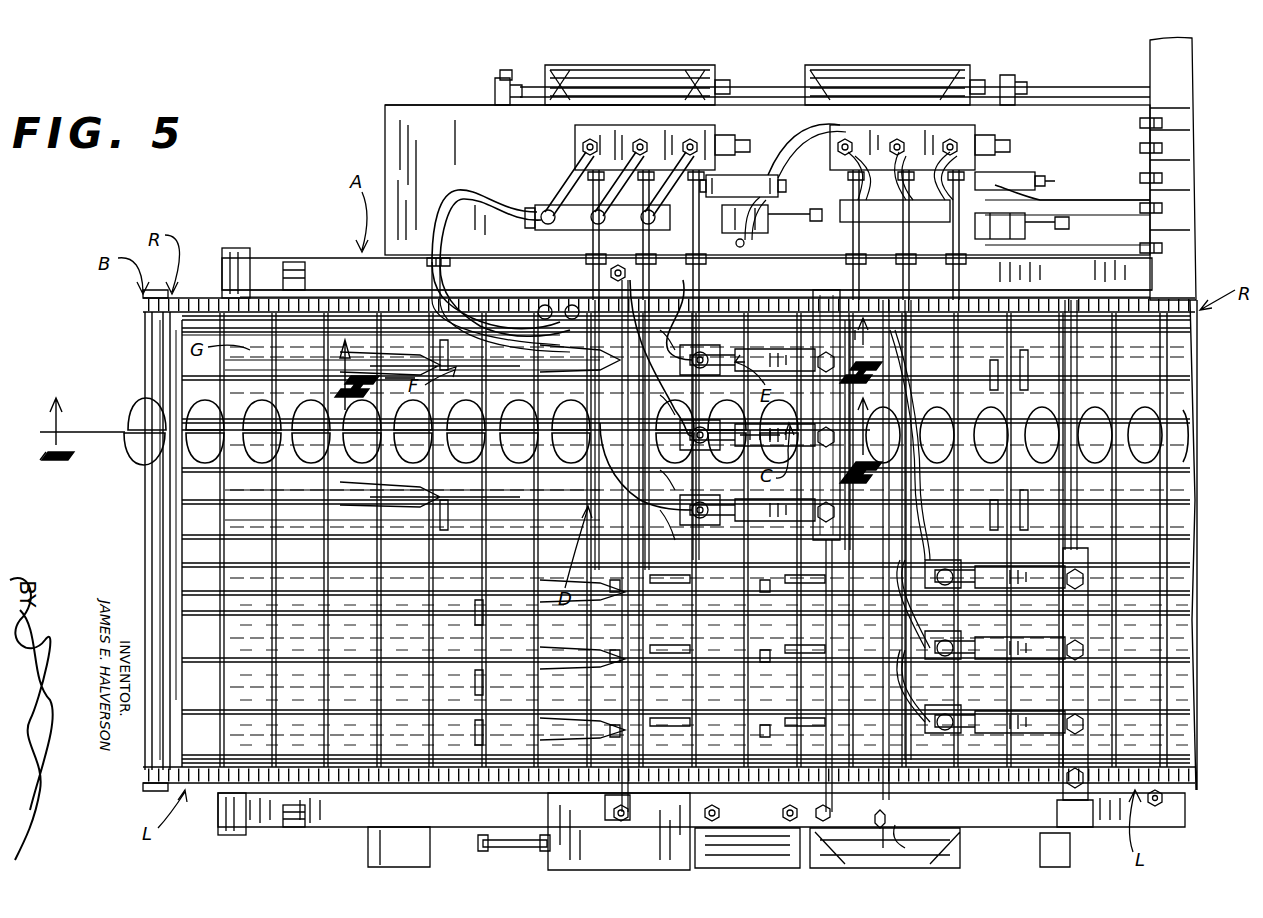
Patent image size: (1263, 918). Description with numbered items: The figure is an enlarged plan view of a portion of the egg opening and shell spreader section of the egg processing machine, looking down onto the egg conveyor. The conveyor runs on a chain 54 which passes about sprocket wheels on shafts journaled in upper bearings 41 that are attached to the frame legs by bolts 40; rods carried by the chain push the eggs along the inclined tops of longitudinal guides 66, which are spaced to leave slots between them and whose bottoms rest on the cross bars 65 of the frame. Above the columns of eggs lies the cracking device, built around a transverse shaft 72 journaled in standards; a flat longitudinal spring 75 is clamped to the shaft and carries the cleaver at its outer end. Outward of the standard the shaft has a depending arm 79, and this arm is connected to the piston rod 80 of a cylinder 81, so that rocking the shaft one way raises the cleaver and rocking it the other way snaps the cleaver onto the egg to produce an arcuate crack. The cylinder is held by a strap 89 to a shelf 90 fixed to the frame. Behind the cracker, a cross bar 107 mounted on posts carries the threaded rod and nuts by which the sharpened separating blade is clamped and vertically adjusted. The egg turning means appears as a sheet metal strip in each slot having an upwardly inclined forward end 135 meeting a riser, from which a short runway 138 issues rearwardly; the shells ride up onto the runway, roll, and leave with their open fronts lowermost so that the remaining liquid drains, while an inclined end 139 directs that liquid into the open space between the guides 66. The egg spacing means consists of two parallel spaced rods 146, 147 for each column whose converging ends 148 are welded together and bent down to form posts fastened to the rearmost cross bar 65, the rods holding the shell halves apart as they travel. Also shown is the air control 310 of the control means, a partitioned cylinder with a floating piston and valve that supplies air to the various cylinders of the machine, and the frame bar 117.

The bolts 40 is at (290, 262).
The upper bearings 41 is at (224, 268).
The chain 54 is at (165, 312).
The cross bars 65 is at (298, 292).
The guides 66 is at (1183, 680).
The transverse shaft 72 is at (808, 278).
The flat longitudinal spring 75 is at (812, 347).
The depending arm 79 is at (812, 240).
The piston rod 80 is at (808, 214).
The cylinder 81 is at (748, 212).
The strap 89 is at (462, 110).
The shelf 90 is at (397, 105).
The cross bar 107 is at (608, 812).
The frame bar 117 is at (1030, 290).
The forward end 135 is at (548, 350).
The runway 138 is at (470, 352).
The inclined end 139 is at (440, 360).
The spaced rod 146 is at (346, 312).
The spaced rod 147 is at (226, 366).
The converging ends 148 is at (405, 340).
The air control 310 is at (618, 128).